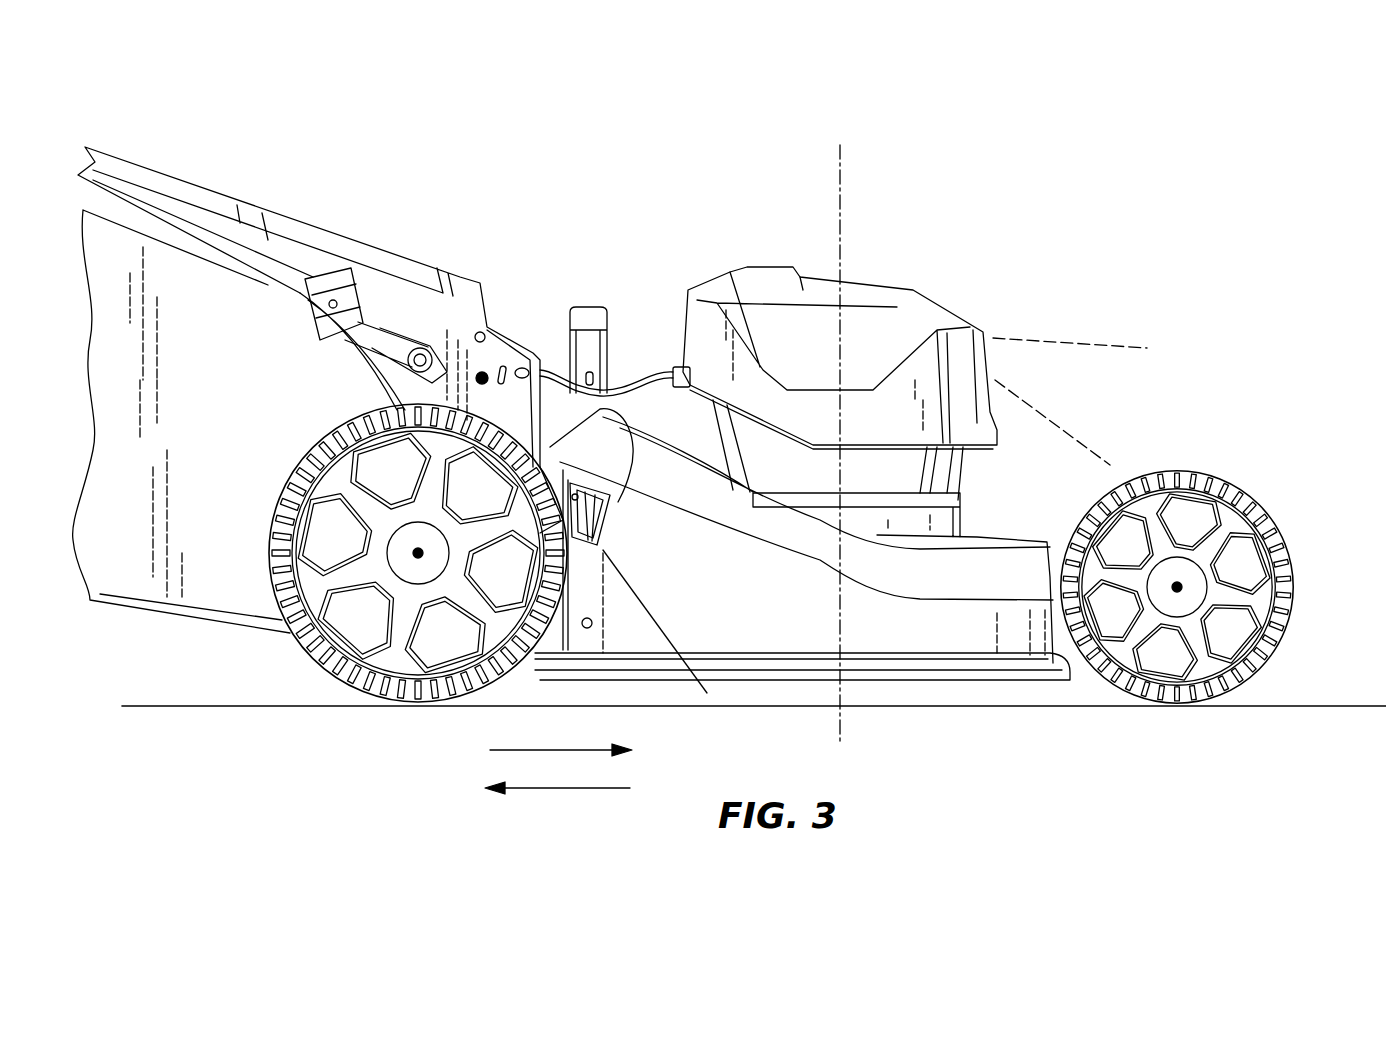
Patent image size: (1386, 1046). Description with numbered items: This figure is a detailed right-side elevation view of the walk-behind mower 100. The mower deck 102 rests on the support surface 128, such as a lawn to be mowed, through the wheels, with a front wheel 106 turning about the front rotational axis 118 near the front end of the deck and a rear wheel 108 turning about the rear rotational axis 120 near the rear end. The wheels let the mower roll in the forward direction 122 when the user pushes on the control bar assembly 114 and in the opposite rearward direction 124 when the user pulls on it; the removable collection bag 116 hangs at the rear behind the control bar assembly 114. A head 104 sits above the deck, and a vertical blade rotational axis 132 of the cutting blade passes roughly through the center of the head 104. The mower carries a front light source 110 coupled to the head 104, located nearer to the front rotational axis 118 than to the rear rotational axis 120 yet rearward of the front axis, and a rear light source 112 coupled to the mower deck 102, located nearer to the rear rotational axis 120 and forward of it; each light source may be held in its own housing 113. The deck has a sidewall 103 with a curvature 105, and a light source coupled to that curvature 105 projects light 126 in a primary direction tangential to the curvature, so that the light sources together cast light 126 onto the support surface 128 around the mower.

The walk-behind mower 100 is at (430, 152).
The mower deck 102 is at (973, 633).
The sidewall 103 is at (880, 633).
The head 104 is at (874, 290).
The curvature 105 is at (665, 590).
The front wheel 106 is at (1222, 693).
The rear wheel 108 is at (313, 657).
The front light source 110 is at (990, 353).
The rear light source 112 is at (612, 492).
The housing 113 is at (583, 452).
The control bar assembly 114 is at (123, 163).
The removable collection bag 116 is at (233, 357).
The front rotational axis 118 is at (1173, 578).
The rear rotational axis 120 is at (418, 560).
The forward direction 122 is at (553, 750).
The rearward direction 124 is at (550, 788).
The light 126 is at (1050, 368).
The support surface 128 is at (1322, 705).
The vertical blade rotational axis 132 is at (834, 214).